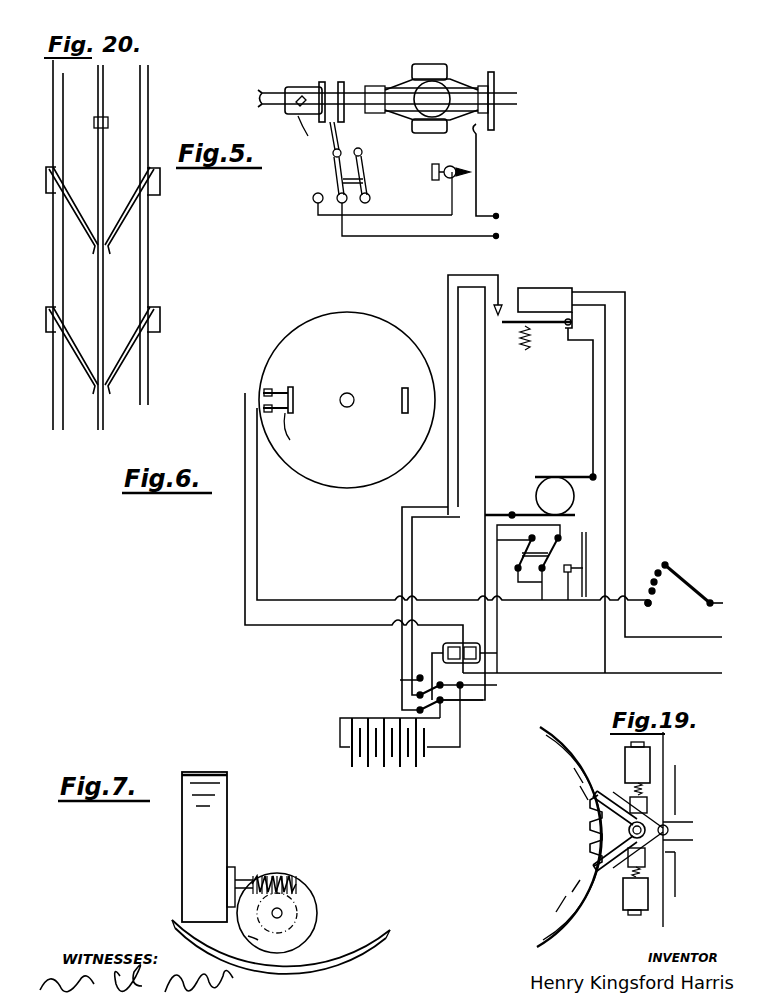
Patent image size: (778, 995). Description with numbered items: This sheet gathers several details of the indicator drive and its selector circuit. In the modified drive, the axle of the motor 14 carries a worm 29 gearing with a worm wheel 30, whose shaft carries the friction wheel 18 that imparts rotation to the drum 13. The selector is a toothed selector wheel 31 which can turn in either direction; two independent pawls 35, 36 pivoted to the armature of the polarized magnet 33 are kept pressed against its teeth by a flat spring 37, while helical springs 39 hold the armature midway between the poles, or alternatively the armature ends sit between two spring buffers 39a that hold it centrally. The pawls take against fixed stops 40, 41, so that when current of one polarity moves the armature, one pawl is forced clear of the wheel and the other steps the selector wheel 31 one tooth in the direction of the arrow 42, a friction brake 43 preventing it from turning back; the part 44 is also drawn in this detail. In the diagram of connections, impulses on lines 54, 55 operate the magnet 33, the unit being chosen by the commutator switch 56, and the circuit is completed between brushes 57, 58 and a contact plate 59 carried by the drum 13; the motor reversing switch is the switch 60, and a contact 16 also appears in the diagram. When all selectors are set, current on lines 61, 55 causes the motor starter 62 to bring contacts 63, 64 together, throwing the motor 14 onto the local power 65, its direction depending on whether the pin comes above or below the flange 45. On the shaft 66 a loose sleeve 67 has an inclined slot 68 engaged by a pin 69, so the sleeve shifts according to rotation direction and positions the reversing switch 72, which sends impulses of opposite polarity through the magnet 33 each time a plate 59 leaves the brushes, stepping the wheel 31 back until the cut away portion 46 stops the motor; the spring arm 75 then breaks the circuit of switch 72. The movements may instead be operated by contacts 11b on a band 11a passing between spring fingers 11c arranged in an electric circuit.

In FIG. 20, the band 11a is at (103, 188).
In FIG. 20, the contacts 11b is at (108, 116).
In FIG. 20, the spring fingers 11c is at (60, 190).
In FIG. 6, the drum 13 is at (336, 486).
In FIG. 7, the drum 13 is at (377, 928).
In FIG. 6, the motor 14 is at (558, 488).
In FIG. 7, the motor 14 is at (218, 802).
In FIG. 6, the contact 16 is at (566, 604).
In FIG. 7, the friction wheel 18 is at (258, 940).
In FIG. 7, the worm 29 is at (292, 882).
In FIG. 7, the worm wheel 30 is at (285, 906).
In FIG. 19, the selector wheel 31 is at (569, 837).
In FIG. 6, the polarized magnet 33 is at (482, 656).
In FIG. 19, the pawl 35 is at (590, 804).
In FIG. 19, the pawl 36 is at (598, 870).
In FIG. 19, the flat spring 37 is at (650, 805).
In FIG. 19, the helical springs 39 is at (648, 865).
In FIG. 19, the spring buffers 39a is at (646, 790).
In FIG. 5, the fixed stop 40 is at (330, 84).
In FIG. 5, the fixed stop 41 is at (270, 85).
In FIG. 5, the arrow 42 is at (333, 170).
In FIG. 5, the friction brake 43 is at (437, 68).
In FIG. 5, the plate 44 is at (500, 118).
In FIG. 5, the flange 45 is at (480, 174).
In FIG. 5, the cut away portion 46 is at (432, 170).
In FIG. 6, the line 54 is at (718, 600).
In FIG. 6, the line 55 is at (706, 672).
In FIG. 6, the commutator switch 56 is at (690, 558).
In FIG. 6, the brush 57 is at (286, 388).
In FIG. 6, the brush 58 is at (298, 432).
In FIG. 6, the contact plate 59 is at (292, 394).
In FIG. 6, the reversing switch 60 is at (412, 686).
In FIG. 6, the line 61 is at (668, 632).
In FIG. 6, the motor starter 62 is at (570, 288).
In FIG. 6, the contact 63 is at (520, 340).
In FIG. 6, the contact 64 is at (500, 300).
In FIG. 6, the local power 65 is at (340, 727).
In FIG. 5, the shaft 66 is at (258, 95).
In FIG. 5, the sleeve 67 is at (302, 138).
In FIG. 5, the inclined slot 68 is at (300, 96).
In FIG. 5, the pin 69 is at (322, 80).
In FIG. 6, the reversing switch 72 is at (480, 550).
In FIG. 6, the spring arm 75 is at (595, 536).